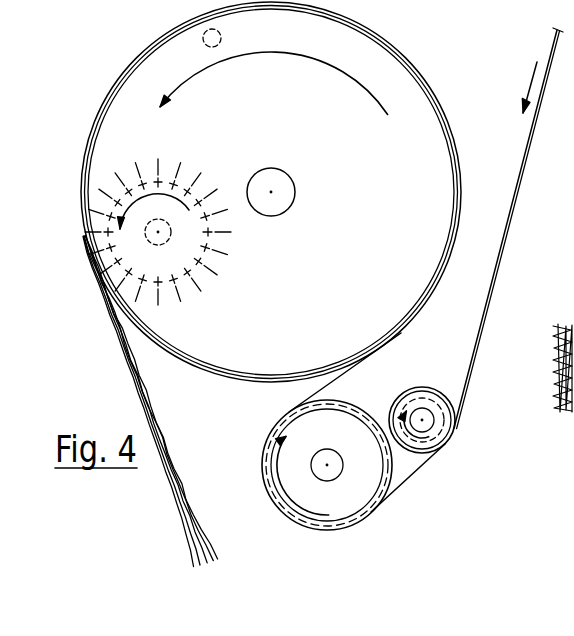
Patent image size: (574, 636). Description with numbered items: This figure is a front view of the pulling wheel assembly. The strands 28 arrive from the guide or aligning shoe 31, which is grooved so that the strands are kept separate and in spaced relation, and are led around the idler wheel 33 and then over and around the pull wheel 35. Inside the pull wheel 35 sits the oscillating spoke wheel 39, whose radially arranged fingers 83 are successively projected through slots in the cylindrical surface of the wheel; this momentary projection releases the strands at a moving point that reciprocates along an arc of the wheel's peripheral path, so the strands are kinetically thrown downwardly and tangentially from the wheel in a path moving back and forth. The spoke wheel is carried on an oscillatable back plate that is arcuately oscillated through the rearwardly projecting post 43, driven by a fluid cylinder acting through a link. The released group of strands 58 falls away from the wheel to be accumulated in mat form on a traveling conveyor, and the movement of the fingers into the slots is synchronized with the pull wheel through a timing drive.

The pull wheel 35 is at (353, 37).
The post 43 is at (222, 38).
The oscillating spoke wheel 39 is at (198, 222).
The fingers 83 is at (223, 234).
The group of strands 58 is at (130, 368).
The idler wheel 33 is at (340, 402).
The guide or aligning shoe 31 is at (428, 386).
The strands 28 is at (522, 137).